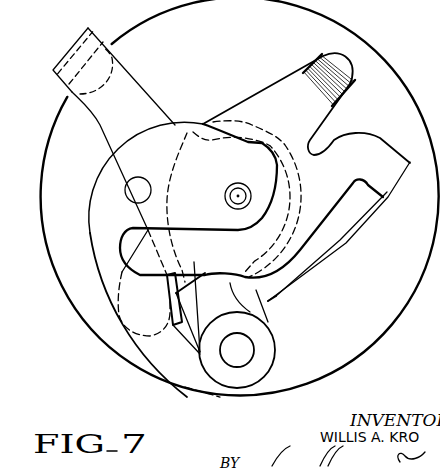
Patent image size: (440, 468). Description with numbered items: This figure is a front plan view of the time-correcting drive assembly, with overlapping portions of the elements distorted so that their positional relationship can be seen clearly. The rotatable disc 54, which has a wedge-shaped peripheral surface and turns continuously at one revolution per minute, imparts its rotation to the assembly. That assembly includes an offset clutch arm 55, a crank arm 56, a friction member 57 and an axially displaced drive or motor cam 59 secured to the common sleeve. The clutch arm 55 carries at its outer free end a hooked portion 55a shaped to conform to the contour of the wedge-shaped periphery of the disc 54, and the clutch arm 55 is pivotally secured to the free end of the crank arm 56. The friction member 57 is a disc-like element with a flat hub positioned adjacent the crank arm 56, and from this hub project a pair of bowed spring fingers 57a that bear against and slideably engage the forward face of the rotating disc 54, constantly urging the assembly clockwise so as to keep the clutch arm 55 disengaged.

The rotatable disc 54 is at (396, 320).
The offset clutch arm 55 is at (150, 97).
The hooked portion 55a is at (60, 62).
The crank arm 56 is at (270, 300).
The friction member 57 is at (250, 97).
The bowed spring fingers 57a is at (345, 55).
The drive or motor cam 59 is at (118, 326).